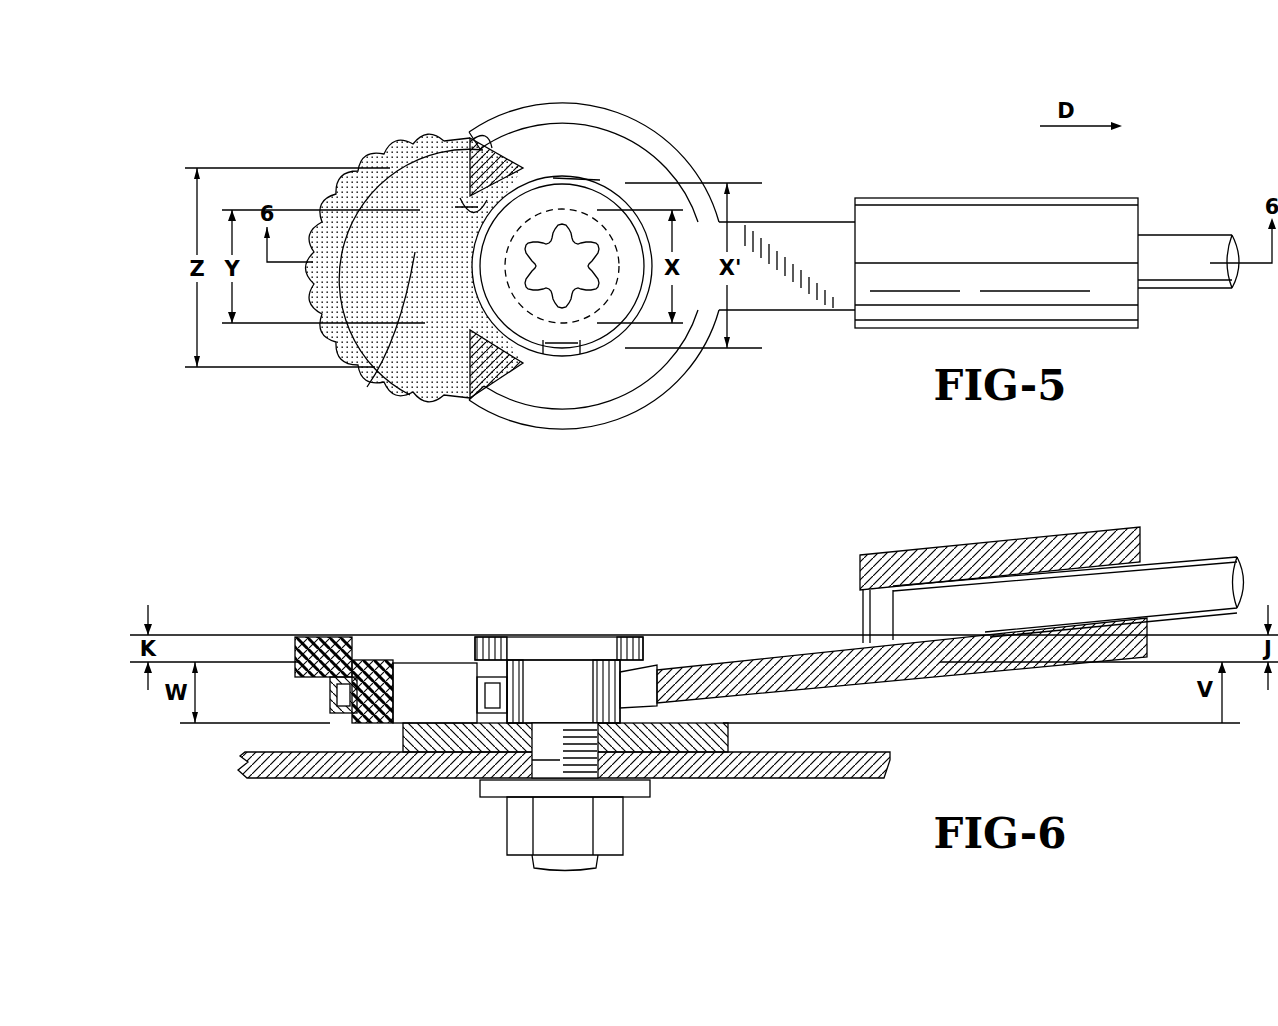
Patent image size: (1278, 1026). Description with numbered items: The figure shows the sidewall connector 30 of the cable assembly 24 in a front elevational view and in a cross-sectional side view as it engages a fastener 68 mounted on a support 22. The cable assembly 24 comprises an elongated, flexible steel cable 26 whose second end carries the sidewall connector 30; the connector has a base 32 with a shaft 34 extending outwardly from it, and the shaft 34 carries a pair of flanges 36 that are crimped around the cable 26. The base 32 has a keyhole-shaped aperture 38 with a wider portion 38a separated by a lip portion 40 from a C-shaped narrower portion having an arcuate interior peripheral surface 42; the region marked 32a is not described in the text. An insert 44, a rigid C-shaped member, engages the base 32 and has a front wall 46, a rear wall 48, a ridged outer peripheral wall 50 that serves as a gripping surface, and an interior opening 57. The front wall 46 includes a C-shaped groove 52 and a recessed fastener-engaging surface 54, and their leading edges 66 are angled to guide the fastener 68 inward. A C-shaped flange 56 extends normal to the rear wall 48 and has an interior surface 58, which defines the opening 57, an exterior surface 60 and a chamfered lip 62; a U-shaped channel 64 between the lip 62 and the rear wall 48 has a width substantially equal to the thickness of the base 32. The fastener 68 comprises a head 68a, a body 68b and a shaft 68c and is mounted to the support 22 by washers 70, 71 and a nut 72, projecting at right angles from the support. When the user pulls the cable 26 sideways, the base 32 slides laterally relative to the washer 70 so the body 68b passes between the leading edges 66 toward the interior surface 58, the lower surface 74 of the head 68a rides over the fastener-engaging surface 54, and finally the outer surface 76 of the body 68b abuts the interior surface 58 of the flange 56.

In FIG. 6, the support 22 is at (825, 777).
In FIG. 5, the cable assembly 24 is at (1138, 159).
In FIG. 6, the cable assembly 24 is at (1110, 491).
In FIG. 5, the cable 26 is at (1188, 248).
In FIG. 6, the cable 26 is at (1200, 572).
In FIG. 5, the sidewall connector 30 is at (775, 318).
In FIG. 6, the sidewall connector 30 is at (820, 648).
In FIG. 5, the base 32 is at (671, 198).
In FIG. 6, the base 32 is at (322, 700).
In FIG. 5, the arcuate portion of lever arm 32a is at (536, 150).
In FIG. 5, the shaft 34 is at (812, 226).
In FIG. 6, the shaft 34 is at (772, 708).
In FIG. 5, the flanges 36 is at (977, 236).
In FIG. 6, the flanges 36 is at (1000, 557).
In FIG. 5, the aperture 38 is at (604, 182).
In FIG. 6, the aperture 38 is at (651, 686).
In FIG. 5, the wider portion 38a is at (588, 178).
In FIG. 5, the lip portion 40 is at (472, 214).
In FIG. 6, the lip portion 40 is at (481, 693).
In FIG. 6, the arcuate interior peripheral surface 42 is at (395, 683).
In FIG. 5, the insert 44 is at (393, 408).
In FIG. 6, the insert 44 is at (401, 630).
In FIG. 5, the front wall 46 is at (428, 385).
In FIG. 6, the front wall 46 is at (333, 640).
In FIG. 6, the rear wall 48 is at (332, 692).
In FIG. 5, the outer peripheral wall 50 is at (312, 336).
In FIG. 6, the outer peripheral wall 50 is at (303, 657).
In FIG. 5, the groove 52 is at (360, 290).
In FIG. 6, the groove 52 is at (432, 650).
In FIG. 5, the fastener-engaging surface 54 is at (366, 387).
In FIG. 6, the fastener-engaging surface 54 is at (378, 662).
In FIG. 5, the flange 56 is at (452, 182).
In FIG. 6, the flange 56 is at (376, 733).
In FIG. 5, the interior opening 57 is at (470, 378).
In FIG. 6, the interior opening 57 is at (467, 738).
In FIG. 5, the interior surface 58 is at (463, 206).
In FIG. 6, the interior surface 58 is at (443, 738).
In FIG. 6, the exterior surface 60 is at (345, 680).
In FIG. 6, the chamfered lip 62 is at (355, 723).
In FIG. 6, the channel 64 is at (320, 716).
In FIG. 5, the leading edges 66 is at (478, 146).
In FIG. 6, the leading edges 66 is at (490, 670).
In FIG. 5, the fastener 68 is at (594, 340).
In FIG. 6, the fastener 68 is at (623, 632).
In FIG. 5, the head 68a is at (602, 352).
In FIG. 6, the head 68a is at (583, 650).
In FIG. 5, the body 68b is at (556, 326).
In FIG. 6, the body 68b is at (537, 677).
In FIG. 6, the shaft 68c is at (557, 776).
In FIG. 5, the washer 70 is at (655, 131).
In FIG. 6, the washer 70 is at (683, 742).
In FIG. 6, the washer 71 is at (650, 798).
In FIG. 6, the nut 72 is at (612, 836).
In FIG. 6, the lower surface 74 is at (568, 672).
In FIG. 5, the outer surface 76 is at (506, 279).